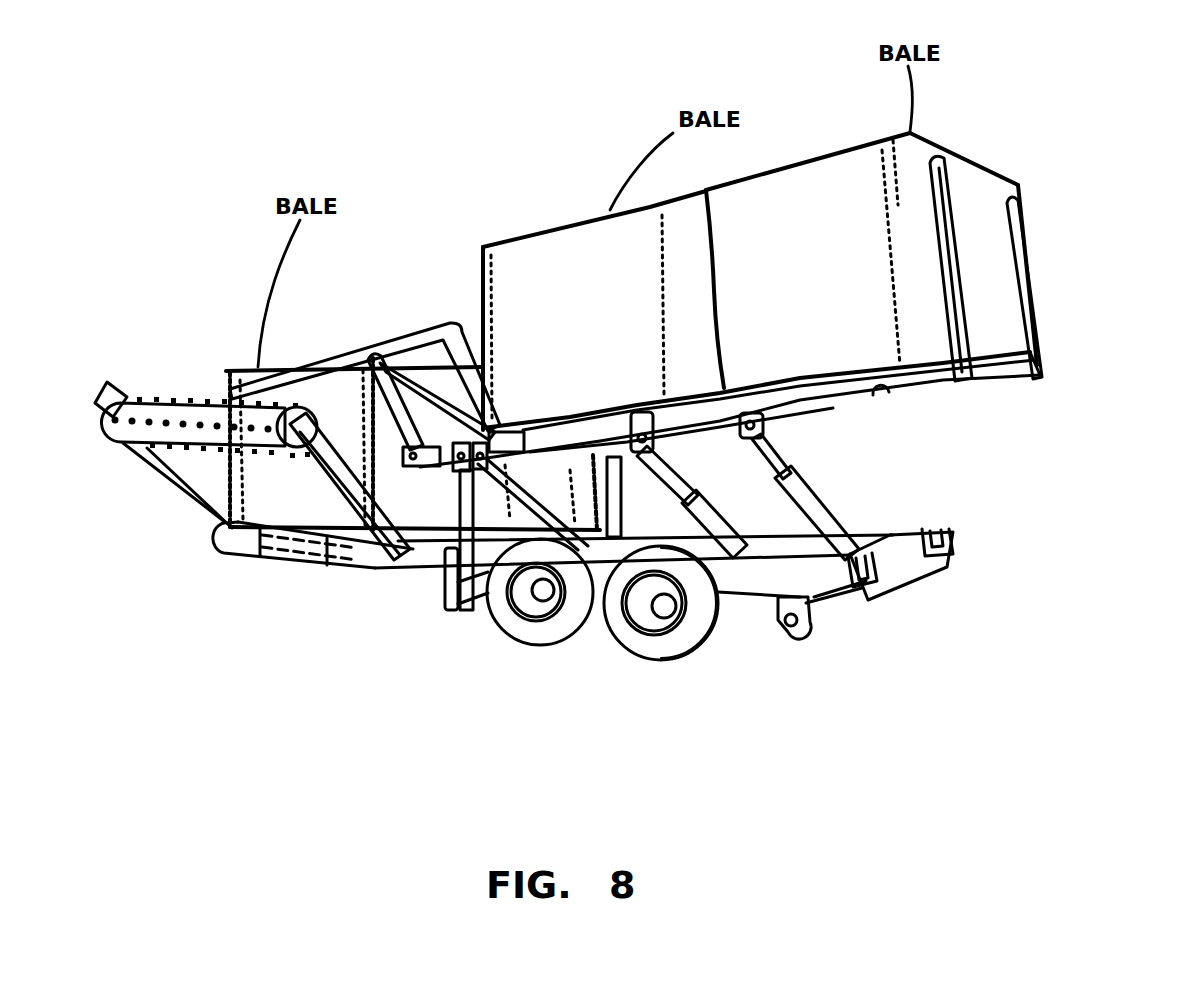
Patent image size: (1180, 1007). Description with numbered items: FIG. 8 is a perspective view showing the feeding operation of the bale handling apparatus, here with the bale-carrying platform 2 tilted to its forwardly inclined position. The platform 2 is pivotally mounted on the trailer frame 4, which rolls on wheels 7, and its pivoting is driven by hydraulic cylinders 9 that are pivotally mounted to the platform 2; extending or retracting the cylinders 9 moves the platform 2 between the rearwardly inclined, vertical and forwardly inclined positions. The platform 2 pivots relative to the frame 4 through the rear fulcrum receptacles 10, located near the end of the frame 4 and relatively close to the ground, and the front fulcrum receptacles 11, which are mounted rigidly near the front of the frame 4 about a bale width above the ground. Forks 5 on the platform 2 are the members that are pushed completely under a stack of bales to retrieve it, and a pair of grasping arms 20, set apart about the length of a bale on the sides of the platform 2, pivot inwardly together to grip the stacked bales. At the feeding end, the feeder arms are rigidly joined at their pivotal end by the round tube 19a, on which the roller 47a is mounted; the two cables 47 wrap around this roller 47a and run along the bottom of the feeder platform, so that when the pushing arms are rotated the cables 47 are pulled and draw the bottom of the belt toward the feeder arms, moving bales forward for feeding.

The bale-carrying platform 2 is at (853, 401).
The trailer frame 4 is at (753, 600).
The forks 5 is at (953, 187).
The wheels 7 is at (543, 648).
The hydraulic cylinders 9 is at (713, 480).
The rear fulcrum receptacles 10 is at (953, 537).
The front fulcrum receptacles 11 is at (455, 467).
The round tube 19a is at (232, 555).
The grasping arms 20 is at (407, 337).
The cables 47 is at (237, 521).
The roller 47a is at (362, 565).